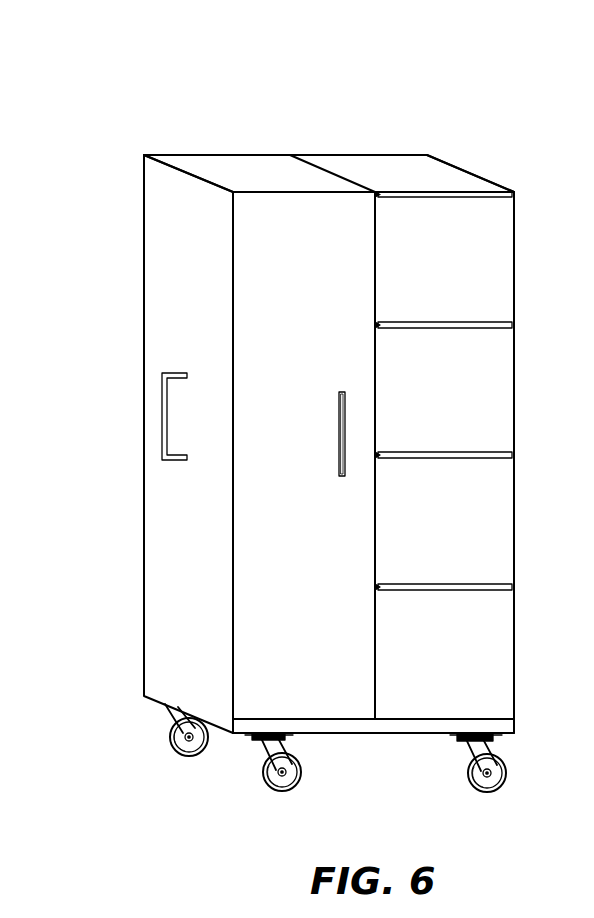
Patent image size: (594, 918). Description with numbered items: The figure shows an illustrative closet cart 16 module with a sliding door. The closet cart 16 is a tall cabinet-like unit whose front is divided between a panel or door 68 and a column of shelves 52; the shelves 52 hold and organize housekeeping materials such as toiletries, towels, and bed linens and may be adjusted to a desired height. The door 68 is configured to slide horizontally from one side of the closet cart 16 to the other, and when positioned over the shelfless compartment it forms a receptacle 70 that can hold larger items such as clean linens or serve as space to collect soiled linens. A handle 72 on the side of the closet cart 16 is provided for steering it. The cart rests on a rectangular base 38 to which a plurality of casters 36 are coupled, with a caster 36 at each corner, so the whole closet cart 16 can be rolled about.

The closet cart 16 is at (199, 104).
The receptacle 70 is at (253, 162).
The door 68 is at (326, 542).
The handle 72 is at (162, 407).
The shelves 52 is at (447, 450).
The casters 36 is at (272, 786).
The base 38 is at (508, 728).